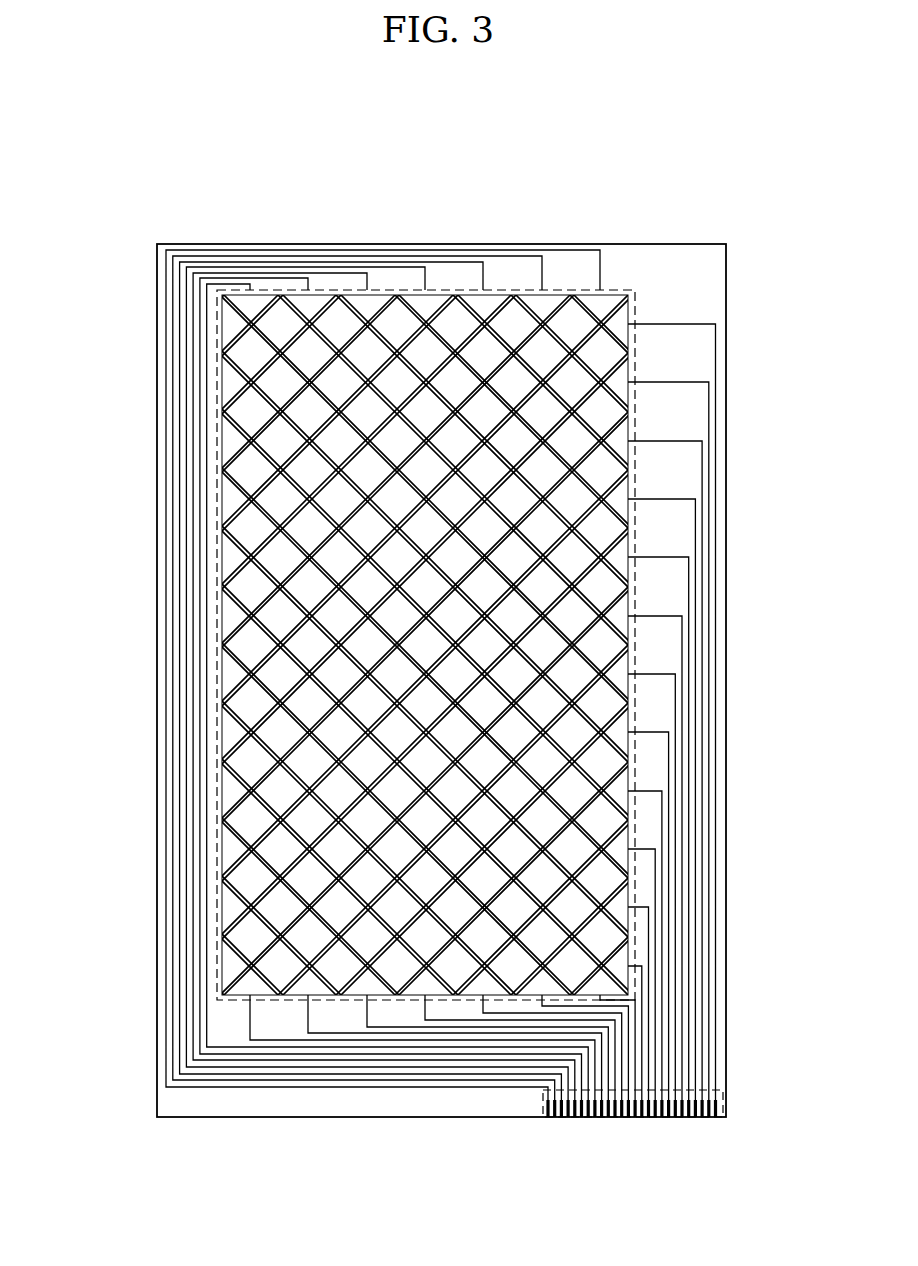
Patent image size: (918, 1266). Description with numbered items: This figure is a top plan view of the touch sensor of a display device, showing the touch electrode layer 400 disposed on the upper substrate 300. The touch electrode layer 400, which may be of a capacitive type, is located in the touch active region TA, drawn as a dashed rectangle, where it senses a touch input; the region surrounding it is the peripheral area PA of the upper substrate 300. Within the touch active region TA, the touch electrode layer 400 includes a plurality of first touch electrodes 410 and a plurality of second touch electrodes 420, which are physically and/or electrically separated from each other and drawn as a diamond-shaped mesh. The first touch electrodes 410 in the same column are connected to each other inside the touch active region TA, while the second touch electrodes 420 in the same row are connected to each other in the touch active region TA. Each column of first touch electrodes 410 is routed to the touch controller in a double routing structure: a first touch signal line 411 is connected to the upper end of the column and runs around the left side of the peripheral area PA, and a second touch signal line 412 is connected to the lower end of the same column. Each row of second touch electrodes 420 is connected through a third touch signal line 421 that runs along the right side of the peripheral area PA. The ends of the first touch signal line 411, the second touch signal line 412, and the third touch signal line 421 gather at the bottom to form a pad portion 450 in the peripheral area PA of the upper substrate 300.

The upper substrate 300 is at (727, 312).
The touch electrode layer 400 is at (425, 633).
The first touch electrodes 410 is at (425, 633).
The second touch electrodes 420 is at (368, 357).
The first touch signal line 411 is at (166, 346).
The second touch signal line 412 is at (418, 1012).
The third touch signal lines 421 is at (722, 779).
The pad portion 450 is at (545, 1102).
The touch active region TA is at (626, 290).
The peripheral area PA is at (166, 246).